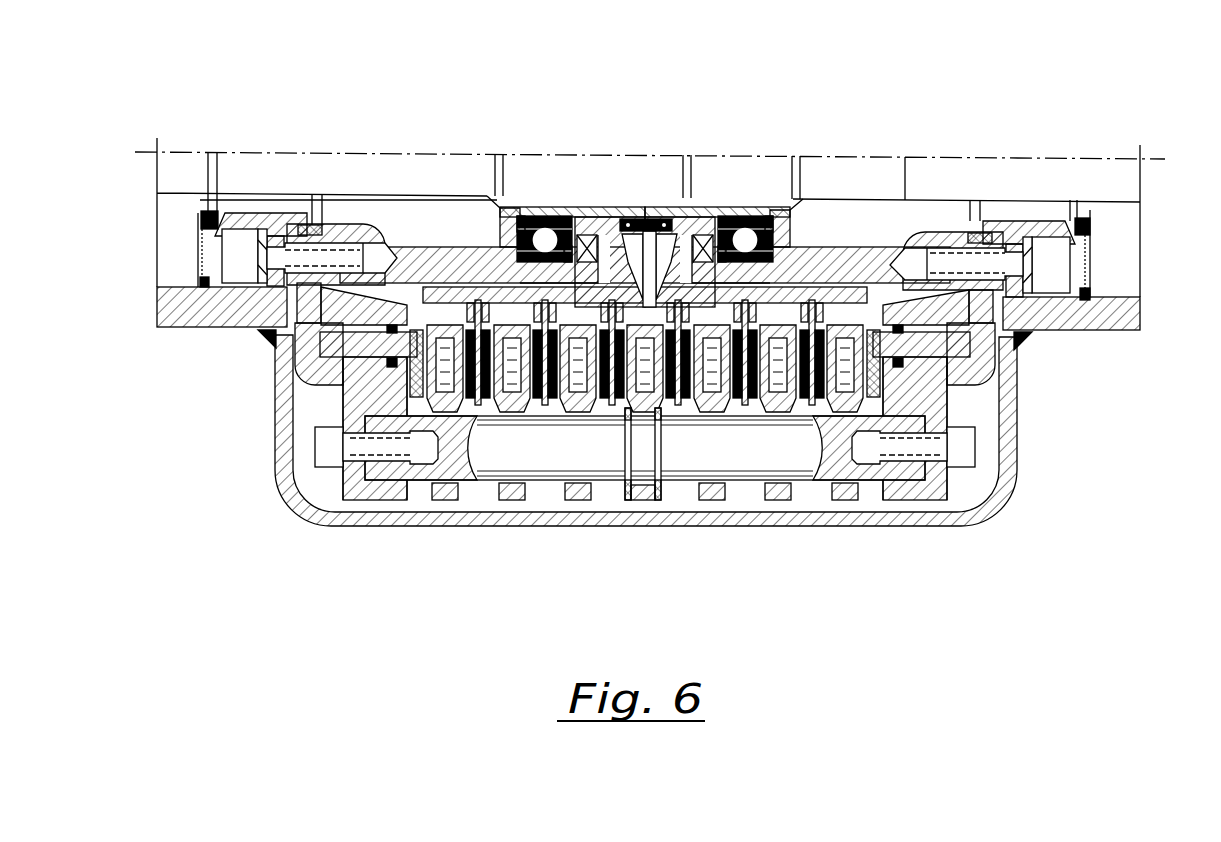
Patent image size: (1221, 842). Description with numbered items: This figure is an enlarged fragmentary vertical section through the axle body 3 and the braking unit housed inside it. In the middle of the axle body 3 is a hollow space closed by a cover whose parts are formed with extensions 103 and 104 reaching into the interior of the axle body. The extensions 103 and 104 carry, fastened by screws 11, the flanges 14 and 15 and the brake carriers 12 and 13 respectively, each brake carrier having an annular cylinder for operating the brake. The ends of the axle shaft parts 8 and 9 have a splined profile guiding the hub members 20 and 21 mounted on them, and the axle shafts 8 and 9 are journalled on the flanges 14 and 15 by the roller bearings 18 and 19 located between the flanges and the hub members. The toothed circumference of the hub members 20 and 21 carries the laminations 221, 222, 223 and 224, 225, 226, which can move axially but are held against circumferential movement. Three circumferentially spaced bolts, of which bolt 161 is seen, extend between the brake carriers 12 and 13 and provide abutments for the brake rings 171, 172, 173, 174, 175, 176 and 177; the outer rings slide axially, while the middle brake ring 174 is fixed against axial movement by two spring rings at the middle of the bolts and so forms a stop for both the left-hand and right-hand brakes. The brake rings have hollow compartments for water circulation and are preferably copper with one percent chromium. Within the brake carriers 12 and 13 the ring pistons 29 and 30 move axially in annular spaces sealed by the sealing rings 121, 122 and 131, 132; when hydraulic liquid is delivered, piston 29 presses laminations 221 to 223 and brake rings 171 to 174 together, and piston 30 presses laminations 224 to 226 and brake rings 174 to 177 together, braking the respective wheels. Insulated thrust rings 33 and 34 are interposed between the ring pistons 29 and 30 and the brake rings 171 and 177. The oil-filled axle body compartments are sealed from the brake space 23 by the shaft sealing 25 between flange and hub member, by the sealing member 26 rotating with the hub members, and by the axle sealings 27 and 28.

The axle body 3 is at (177, 308).
The axle shaft part 8 is at (905, 175).
The axle shaft part 9 is at (385, 170).
The screws 11 is at (240, 255).
The brake carrier 12 is at (932, 395).
The sealing ring 121 is at (943, 347).
The sealing ring 122 is at (922, 378).
The brake carrier 13 is at (412, 392).
The sealing ring 131 is at (345, 335).
The sealing ring 132 is at (360, 383).
The flange 14 is at (845, 255).
The flange 15 is at (445, 257).
The bolt 161 is at (420, 472).
The brake ring 171 is at (843, 500).
The brake ring 172 is at (776, 500).
The brake ring 173 is at (710, 500).
The middle brake ring 174 is at (643, 500).
The brake ring 175 is at (576, 500).
The brake ring 176 is at (510, 500).
The brake ring 177 is at (443, 500).
The roller bearing 18 is at (746, 222).
The roller bearing 19 is at (533, 216).
The hub member 20 is at (700, 290).
The hub member 21 is at (592, 290).
The lamination 221 is at (812, 405).
The lamination 222 is at (745, 405).
The lamination 223 is at (678, 405).
The lamination 224 is at (612, 405).
The lamination 225 is at (545, 405).
The lamination 226 is at (478, 405).
The brake space 23 is at (325, 490).
The shaft sealing 25 is at (588, 236).
The sealing member 26 is at (646, 219).
The axle sealing 27 is at (722, 250).
The axle sealing 28 is at (207, 212).
The ring piston 29 is at (905, 368).
The ring piston 30 is at (394, 359).
The insulated thrust ring 33 is at (885, 398).
The insulated thrust ring 34 is at (405, 410).
The extension 103 is at (1012, 228).
The extension 104 is at (268, 214).